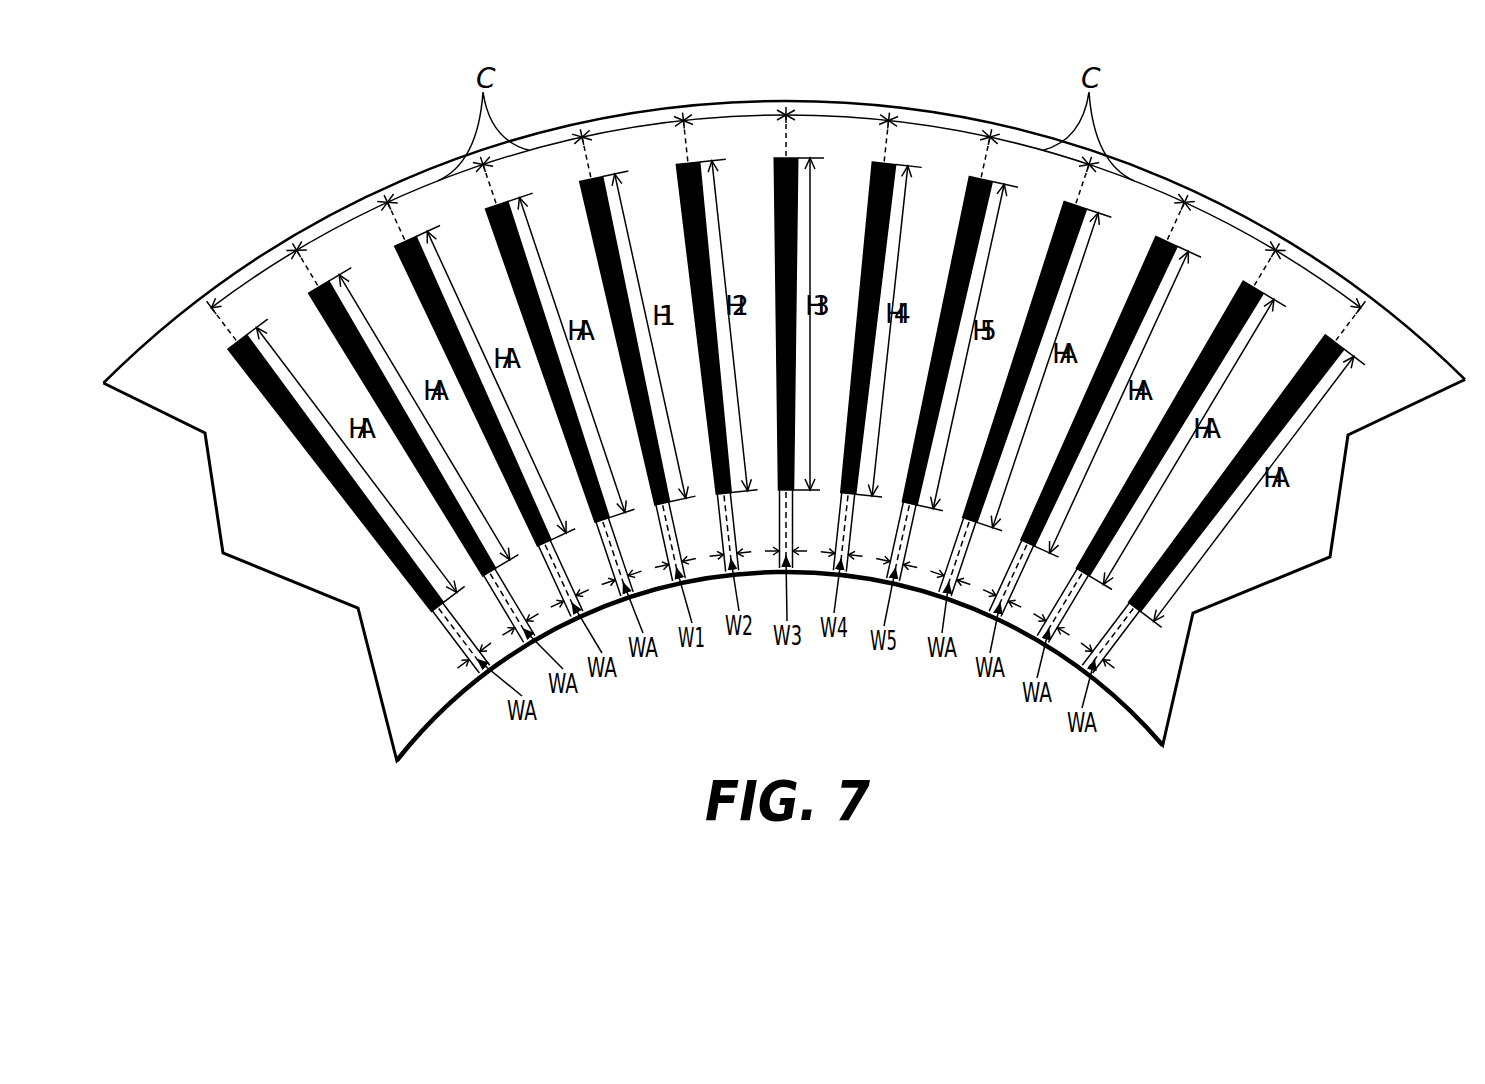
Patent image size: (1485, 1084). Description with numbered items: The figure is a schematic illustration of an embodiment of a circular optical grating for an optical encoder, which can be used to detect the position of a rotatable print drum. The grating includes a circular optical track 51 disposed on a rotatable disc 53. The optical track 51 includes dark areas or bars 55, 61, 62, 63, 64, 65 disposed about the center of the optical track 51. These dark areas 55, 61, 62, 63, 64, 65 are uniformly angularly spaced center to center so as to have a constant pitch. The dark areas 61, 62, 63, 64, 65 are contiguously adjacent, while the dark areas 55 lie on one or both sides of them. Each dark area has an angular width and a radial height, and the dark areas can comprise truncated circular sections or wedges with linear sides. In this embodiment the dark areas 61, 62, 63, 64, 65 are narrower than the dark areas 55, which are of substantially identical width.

The circular optical track 51 is at (784, 422).
The rotatable disc 53 is at (1215, 198).
The dark areas 55 is at (239, 338).
The dark area 61 is at (595, 176).
The dark area 62 is at (692, 161).
The dark area 63 is at (790, 156).
The dark area 64 is at (888, 162).
The dark area 65 is at (985, 178).